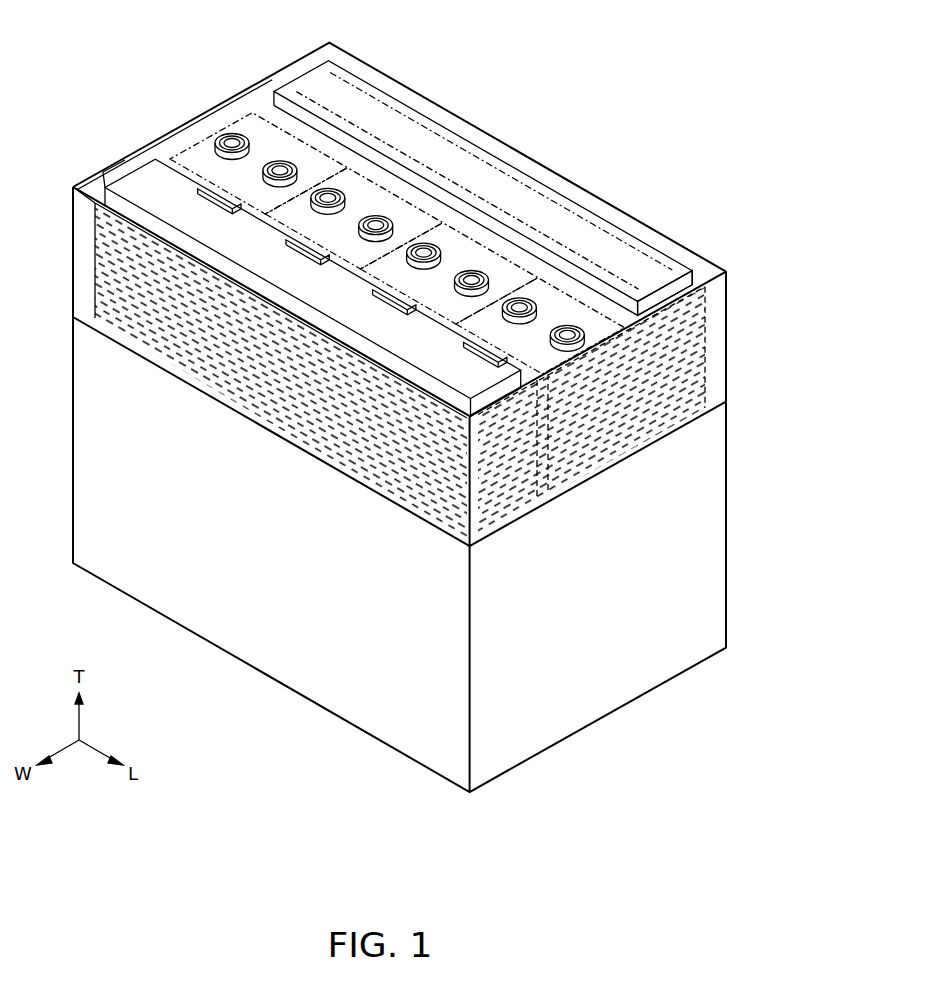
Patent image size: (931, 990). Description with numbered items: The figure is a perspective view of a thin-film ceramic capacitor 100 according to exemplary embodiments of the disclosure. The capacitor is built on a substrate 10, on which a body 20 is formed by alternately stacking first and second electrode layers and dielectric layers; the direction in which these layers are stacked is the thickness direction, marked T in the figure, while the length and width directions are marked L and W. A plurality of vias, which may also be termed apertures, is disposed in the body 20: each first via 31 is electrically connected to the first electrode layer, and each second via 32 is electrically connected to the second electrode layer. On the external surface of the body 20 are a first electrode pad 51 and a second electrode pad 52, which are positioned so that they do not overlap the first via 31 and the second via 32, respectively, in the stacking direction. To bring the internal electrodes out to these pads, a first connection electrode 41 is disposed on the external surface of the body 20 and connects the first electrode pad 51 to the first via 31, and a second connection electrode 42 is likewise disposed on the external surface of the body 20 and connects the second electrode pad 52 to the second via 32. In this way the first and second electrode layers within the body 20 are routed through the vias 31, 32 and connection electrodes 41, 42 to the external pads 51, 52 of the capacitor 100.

The thin-film ceramic capacitor 100 is at (612, 41).
The substrate 10 is at (717, 520).
The body 20 is at (719, 348).
The first via 31 is at (413, 233).
The second via 32 is at (553, 320).
The first connection electrode 41 is at (100, 176).
The second connection electrode 42 is at (673, 242).
The first electrode pad 51 is at (130, 168).
The second electrode pad 52 is at (300, 74).